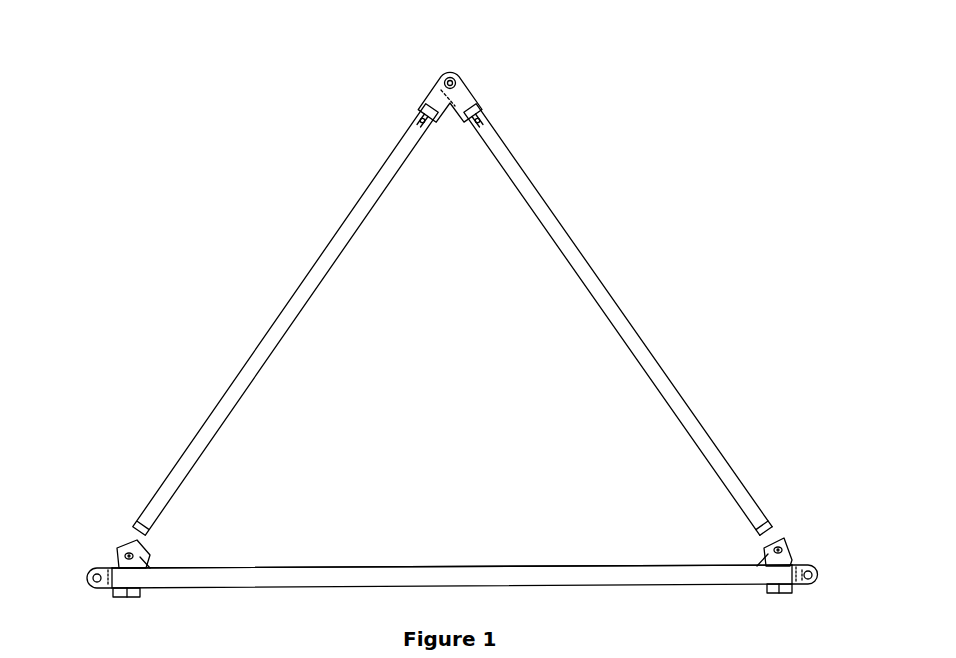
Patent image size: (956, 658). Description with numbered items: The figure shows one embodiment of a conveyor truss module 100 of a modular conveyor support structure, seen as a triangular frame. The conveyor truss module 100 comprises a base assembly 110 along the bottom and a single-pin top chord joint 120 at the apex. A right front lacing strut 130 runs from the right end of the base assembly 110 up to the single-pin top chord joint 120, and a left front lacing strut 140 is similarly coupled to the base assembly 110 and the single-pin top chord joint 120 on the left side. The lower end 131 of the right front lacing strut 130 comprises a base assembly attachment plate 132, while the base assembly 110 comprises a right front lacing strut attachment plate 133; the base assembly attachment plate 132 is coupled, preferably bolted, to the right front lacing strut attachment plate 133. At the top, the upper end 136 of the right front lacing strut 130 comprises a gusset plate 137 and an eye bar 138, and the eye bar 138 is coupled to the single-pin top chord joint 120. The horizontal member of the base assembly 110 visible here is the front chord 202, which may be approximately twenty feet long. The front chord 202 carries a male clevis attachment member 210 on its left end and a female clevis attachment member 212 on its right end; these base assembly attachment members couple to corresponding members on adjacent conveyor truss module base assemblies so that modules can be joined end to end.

The conveyor truss module 100 is at (327, 117).
The base assembly 110 is at (215, 606).
The single-pin top chord joint 120 is at (449, 60).
The right front lacing strut 130 is at (661, 331).
The lower end 131 is at (781, 506).
The base assembly attachment plate 132 is at (784, 530).
The right front lacing strut attachment plate 133 is at (790, 550).
The upper end 136 is at (500, 113).
The gusset plate 137 is at (480, 100).
The eye bar 138 is at (470, 84).
The left front lacing strut 140 is at (270, 303).
The front chord 202 is at (470, 567).
The male clevis attachment member 210 is at (88, 594).
The female clevis attachment member 212 is at (818, 583).